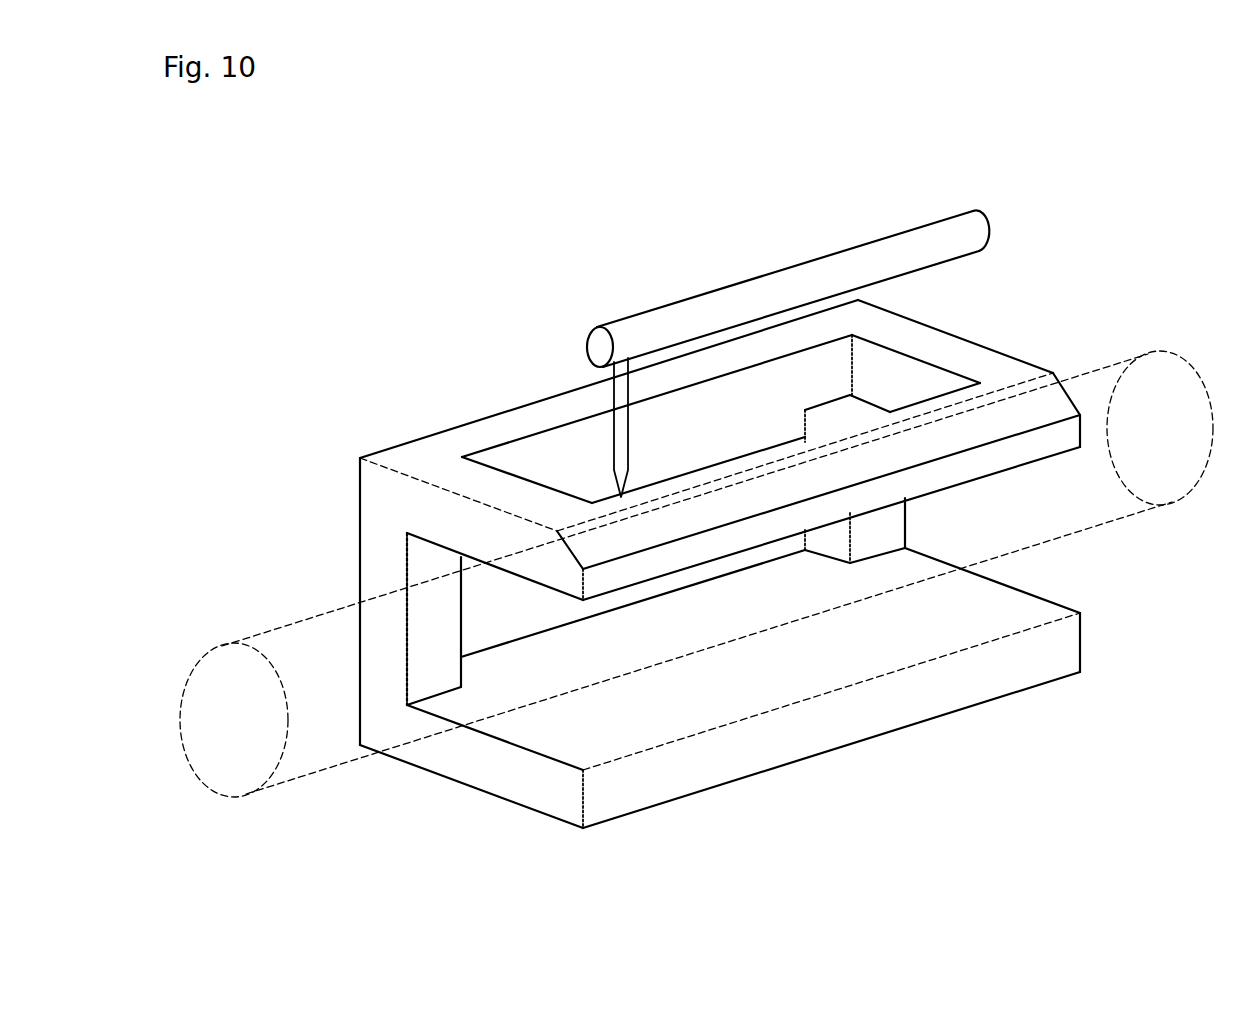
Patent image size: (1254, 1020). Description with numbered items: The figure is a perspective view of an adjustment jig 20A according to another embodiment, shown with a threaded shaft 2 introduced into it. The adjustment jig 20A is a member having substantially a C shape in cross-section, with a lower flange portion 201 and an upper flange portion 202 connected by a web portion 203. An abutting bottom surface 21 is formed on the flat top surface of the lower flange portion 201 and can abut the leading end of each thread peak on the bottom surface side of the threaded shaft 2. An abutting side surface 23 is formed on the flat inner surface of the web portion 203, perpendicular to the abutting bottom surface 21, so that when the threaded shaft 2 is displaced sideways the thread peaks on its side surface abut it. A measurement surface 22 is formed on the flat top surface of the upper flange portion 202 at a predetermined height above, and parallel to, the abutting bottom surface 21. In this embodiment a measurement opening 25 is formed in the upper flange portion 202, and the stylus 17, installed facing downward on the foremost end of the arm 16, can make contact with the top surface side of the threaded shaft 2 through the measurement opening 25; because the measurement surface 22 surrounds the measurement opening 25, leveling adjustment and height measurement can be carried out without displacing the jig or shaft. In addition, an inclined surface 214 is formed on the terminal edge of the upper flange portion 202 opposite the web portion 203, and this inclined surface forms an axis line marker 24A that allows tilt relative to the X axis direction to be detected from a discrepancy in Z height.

The threaded shaft 2 is at (1177, 352).
The arm 16 is at (694, 313).
The stylus 17 is at (610, 428).
The adjustment jig 20A is at (344, 445).
The abutting bottom surface 21 is at (1015, 610).
The measurement surface 22 is at (495, 430).
The abutting side surface 23 is at (430, 625).
The axis line marker 24A is at (1084, 336).
The measurement opening 25 is at (910, 383).
The lower flange portion 201 is at (522, 782).
The upper flange portion 202 is at (418, 503).
The web portion 203 is at (374, 558).
The inclined surface 214 is at (1018, 410).